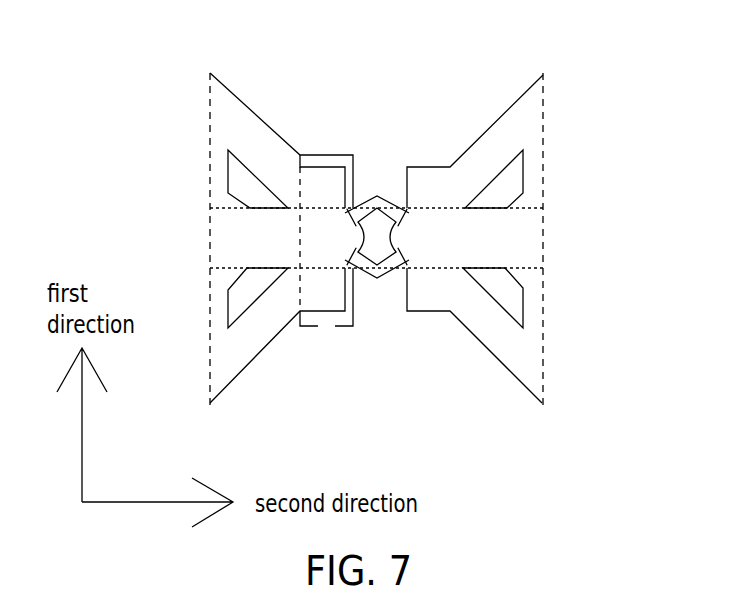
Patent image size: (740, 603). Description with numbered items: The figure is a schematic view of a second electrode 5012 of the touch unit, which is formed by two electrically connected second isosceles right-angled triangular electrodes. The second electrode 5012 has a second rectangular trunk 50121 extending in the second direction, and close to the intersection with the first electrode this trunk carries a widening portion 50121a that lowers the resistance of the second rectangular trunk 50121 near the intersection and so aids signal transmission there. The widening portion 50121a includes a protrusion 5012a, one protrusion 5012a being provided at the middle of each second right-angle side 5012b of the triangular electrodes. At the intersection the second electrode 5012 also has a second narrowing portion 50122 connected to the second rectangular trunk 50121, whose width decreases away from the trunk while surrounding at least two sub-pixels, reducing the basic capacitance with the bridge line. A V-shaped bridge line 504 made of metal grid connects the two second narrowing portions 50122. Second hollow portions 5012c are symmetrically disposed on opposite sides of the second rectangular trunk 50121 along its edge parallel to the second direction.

The second electrode 5012 is at (407, 41).
The protrusion 5012a is at (325, 188).
The second right-angle side 5012b is at (258, 357).
The second hollow portion 5012c is at (508, 180).
The second rectangular trunk 50121 is at (515, 242).
The widening portion 50121a is at (317, 326).
The second narrowing portion 50122 is at (393, 240).
The bridge line 504 is at (390, 274).